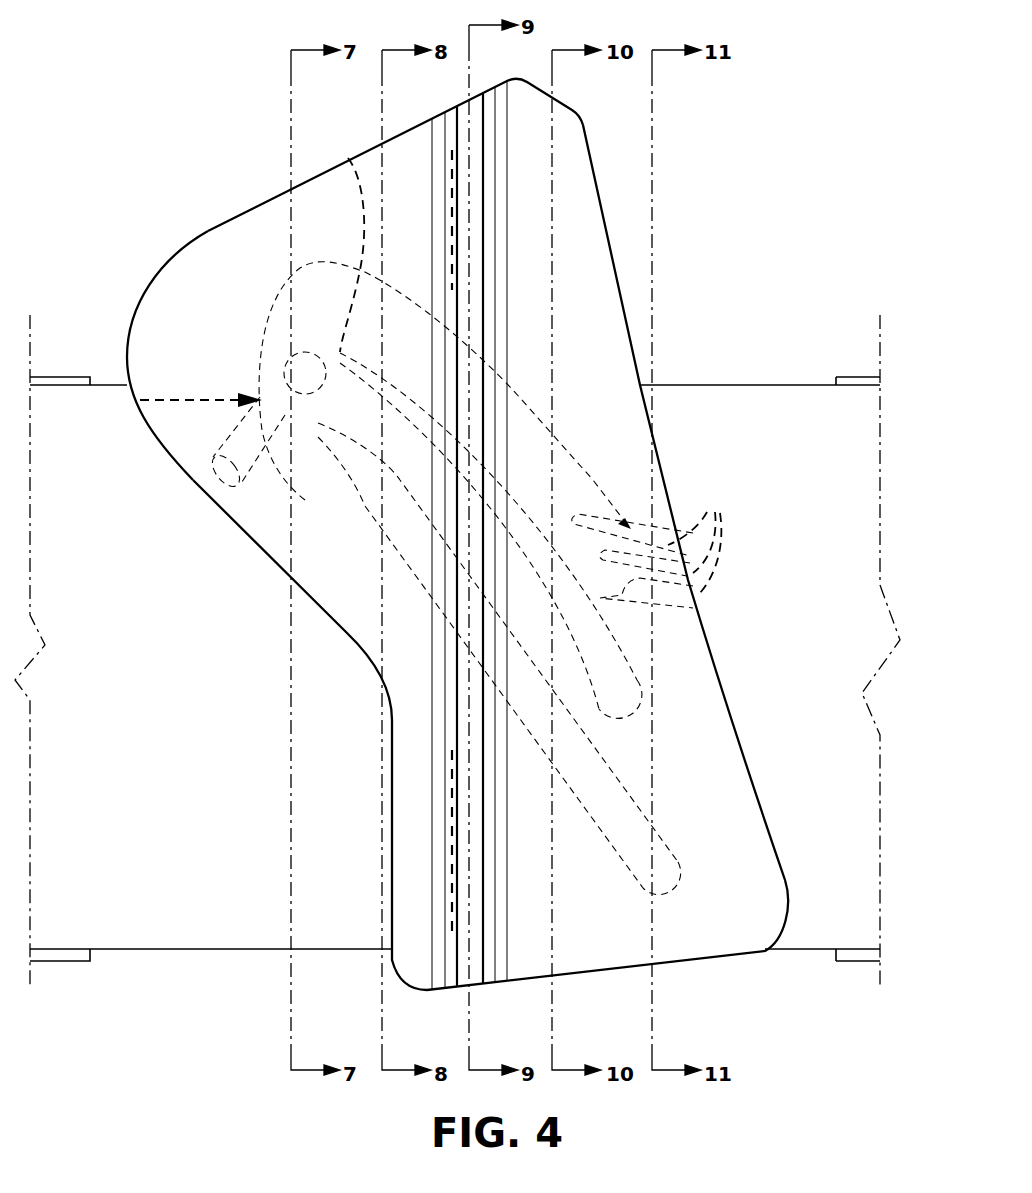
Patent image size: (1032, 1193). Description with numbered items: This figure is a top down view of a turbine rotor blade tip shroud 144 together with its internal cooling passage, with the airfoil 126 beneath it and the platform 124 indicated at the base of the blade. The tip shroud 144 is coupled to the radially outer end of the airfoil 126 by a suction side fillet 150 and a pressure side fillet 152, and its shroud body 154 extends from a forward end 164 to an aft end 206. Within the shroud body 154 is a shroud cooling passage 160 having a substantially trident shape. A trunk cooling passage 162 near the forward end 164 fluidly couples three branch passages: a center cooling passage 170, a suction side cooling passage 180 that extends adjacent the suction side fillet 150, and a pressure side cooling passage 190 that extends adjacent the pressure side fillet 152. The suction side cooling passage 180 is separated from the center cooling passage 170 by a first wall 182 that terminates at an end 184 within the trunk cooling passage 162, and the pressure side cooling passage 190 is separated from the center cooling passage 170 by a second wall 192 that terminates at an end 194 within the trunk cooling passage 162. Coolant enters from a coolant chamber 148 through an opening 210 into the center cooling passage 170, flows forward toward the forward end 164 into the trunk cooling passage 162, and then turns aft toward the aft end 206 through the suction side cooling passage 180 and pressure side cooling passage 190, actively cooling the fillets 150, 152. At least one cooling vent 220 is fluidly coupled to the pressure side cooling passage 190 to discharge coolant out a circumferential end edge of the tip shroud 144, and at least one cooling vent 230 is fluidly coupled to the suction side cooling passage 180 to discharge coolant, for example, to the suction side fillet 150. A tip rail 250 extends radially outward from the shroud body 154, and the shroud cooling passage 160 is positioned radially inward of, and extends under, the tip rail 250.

The platform 124 is at (845, 510).
The airfoil 126 is at (677, 750).
The tip shroud 144 is at (258, 190).
The coolant chamber 148 is at (215, 470).
The suction side fillet 150 is at (630, 498).
The pressure side fillet 152 is at (262, 505).
The shroud body 154 is at (195, 240).
The shroud cooling passage 160 is at (140, 400).
The trunk cooling passage 162 is at (270, 337).
The forward end 164 is at (223, 247).
The center cooling passage 170 is at (400, 452).
The suction side cooling passage 180 is at (513, 410).
The first wall 182 is at (475, 473).
The end 184 is at (341, 242).
The pressure side cooling passage 190 is at (415, 545).
The second wall 192 is at (452, 555).
The end 194 is at (343, 437).
The aft end 206 is at (758, 925).
The opening 210 is at (283, 382).
The cooling vent 220 is at (690, 930).
The cooling vent 230 is at (663, 546).
The tip rail 250 is at (470, 915).